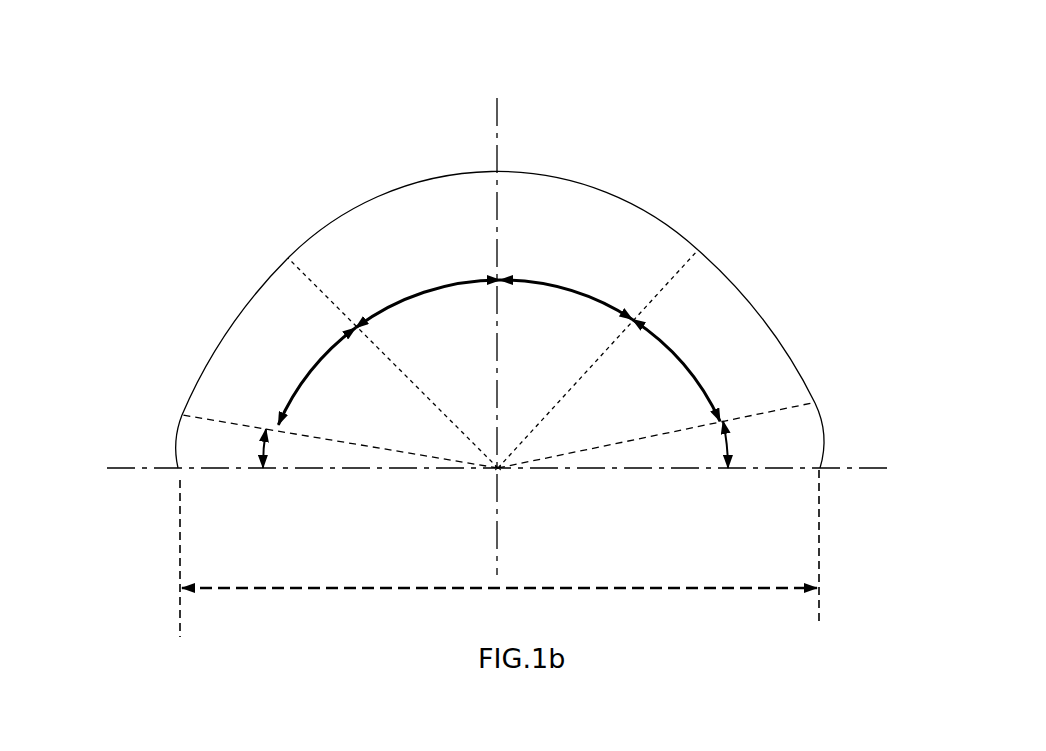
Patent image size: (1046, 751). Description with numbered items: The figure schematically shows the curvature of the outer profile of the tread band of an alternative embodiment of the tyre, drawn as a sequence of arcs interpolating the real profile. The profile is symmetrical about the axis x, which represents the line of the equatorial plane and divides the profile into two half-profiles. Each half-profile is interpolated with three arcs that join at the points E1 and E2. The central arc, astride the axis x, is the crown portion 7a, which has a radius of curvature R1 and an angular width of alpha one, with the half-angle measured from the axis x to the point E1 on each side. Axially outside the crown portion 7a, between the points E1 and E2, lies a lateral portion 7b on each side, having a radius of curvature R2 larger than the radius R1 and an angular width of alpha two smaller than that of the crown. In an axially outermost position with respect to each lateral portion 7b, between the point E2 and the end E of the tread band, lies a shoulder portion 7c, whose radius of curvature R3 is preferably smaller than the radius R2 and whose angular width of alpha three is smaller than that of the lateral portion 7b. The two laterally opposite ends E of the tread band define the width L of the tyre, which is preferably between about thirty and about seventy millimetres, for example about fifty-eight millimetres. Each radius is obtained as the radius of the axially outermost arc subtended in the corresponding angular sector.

The crown portion 7a is at (501, 141).
The lateral portion 7b is at (503, 303).
The shoulder portion 7c is at (504, 407).
The radius of curvature of the crown portion R1 is at (386, 198).
The radius of curvature of the lateral portion R2 is at (226, 326).
The radius of curvature of the shoulder portion R3 is at (176, 440).
The joining point of the profile E1 is at (498, 342).
The joining point of the profile E2 is at (504, 420).
The end of the tread band E is at (494, 553).
The axis of the equatorial plane x is at (498, 135).
The width of the tyre L is at (499, 568).